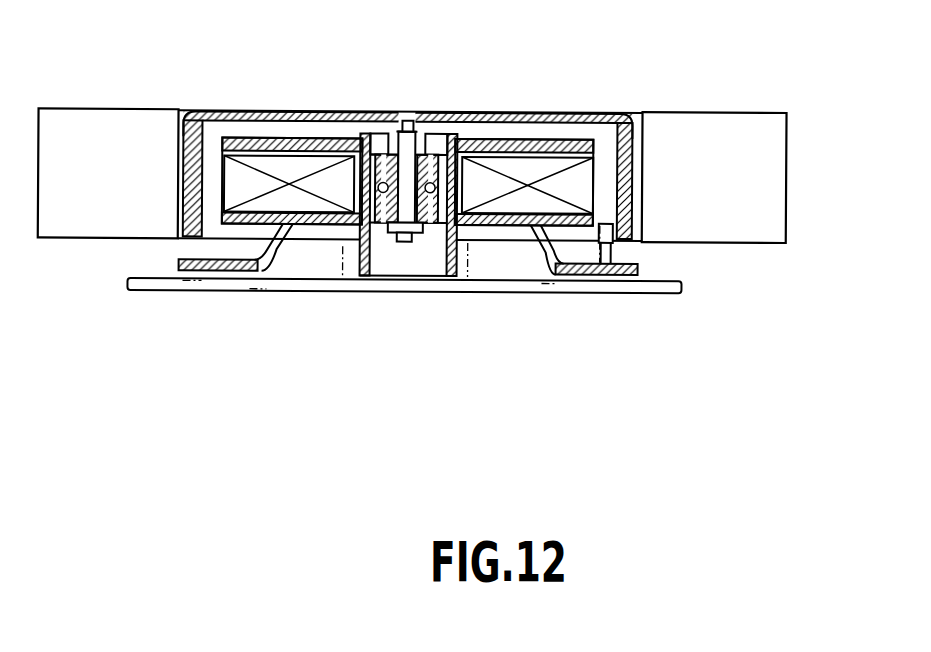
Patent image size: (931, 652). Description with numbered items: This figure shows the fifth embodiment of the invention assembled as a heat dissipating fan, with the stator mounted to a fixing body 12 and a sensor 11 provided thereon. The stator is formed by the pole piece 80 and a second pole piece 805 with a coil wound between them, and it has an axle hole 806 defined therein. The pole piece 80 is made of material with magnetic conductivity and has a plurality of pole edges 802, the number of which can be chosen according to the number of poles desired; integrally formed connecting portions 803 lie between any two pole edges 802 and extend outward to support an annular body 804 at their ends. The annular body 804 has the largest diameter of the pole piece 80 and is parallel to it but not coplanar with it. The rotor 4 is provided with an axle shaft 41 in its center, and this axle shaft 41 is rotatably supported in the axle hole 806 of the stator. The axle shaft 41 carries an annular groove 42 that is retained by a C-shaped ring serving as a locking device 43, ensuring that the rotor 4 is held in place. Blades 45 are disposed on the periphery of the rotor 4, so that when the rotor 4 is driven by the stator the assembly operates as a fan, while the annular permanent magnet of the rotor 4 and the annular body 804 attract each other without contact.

The rotor 4 is at (645, 118).
The sensor 11 is at (606, 246).
The fixing body 12 is at (678, 292).
The axle shaft 41 is at (407, 207).
The annular groove 42 is at (614, 242).
The locking device 43 is at (431, 238).
The blades 45 is at (123, 117).
The pole piece 80 is at (477, 226).
The pole edges 802 is at (246, 228).
The connecting portions 803 is at (284, 252).
The annular body 804 is at (176, 273).
The pole piece 805 is at (518, 145).
The axle hole 806 is at (435, 138).